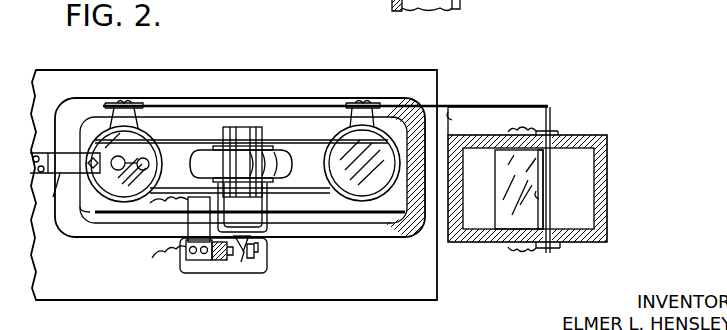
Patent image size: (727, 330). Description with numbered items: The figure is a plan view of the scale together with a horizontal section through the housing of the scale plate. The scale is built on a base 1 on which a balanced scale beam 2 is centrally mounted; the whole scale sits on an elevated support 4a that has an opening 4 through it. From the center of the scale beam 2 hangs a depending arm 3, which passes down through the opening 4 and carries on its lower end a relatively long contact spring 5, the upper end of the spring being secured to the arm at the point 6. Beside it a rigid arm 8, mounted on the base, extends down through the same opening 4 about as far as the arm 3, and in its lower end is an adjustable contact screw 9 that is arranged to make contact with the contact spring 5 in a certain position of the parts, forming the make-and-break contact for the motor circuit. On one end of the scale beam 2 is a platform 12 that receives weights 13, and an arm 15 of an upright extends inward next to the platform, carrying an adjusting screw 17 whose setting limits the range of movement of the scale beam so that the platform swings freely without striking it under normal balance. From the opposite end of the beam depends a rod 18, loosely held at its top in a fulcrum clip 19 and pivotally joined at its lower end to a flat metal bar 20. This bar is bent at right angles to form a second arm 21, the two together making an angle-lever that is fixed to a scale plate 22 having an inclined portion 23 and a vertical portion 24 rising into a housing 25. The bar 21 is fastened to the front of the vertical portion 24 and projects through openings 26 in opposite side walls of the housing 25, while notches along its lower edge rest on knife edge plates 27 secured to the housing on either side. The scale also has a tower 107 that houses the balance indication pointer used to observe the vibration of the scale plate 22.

The base 1 is at (361, 237).
The scale beam 2 is at (280, 148).
The depending arm 3 is at (243, 262).
The opening 4 is at (258, 262).
The elevated support 4a is at (109, 296).
The contact spring 5 is at (255, 255).
The securing point 6 is at (258, 246).
The rigid arm 8 is at (212, 248).
The adjustable contact screw 9 is at (231, 255).
The platform 12 is at (106, 142).
The weights 13 is at (148, 160).
The arm 15 is at (65, 181).
The adjusting screw 17 is at (96, 214).
The rod 18 is at (446, 103).
The fulcrum clip 19 is at (463, 118).
The flat metal bar 20 is at (490, 106).
The second arm 21 is at (551, 114).
The scale plate 22 is at (541, 197).
The inclined portion 23 is at (506, 207).
The vertical portion 24 is at (543, 170).
The housing 25 is at (607, 176).
The openings 26 is at (573, 135).
The knife edge plates 27 is at (555, 128).
The tower 107 is at (216, 158).